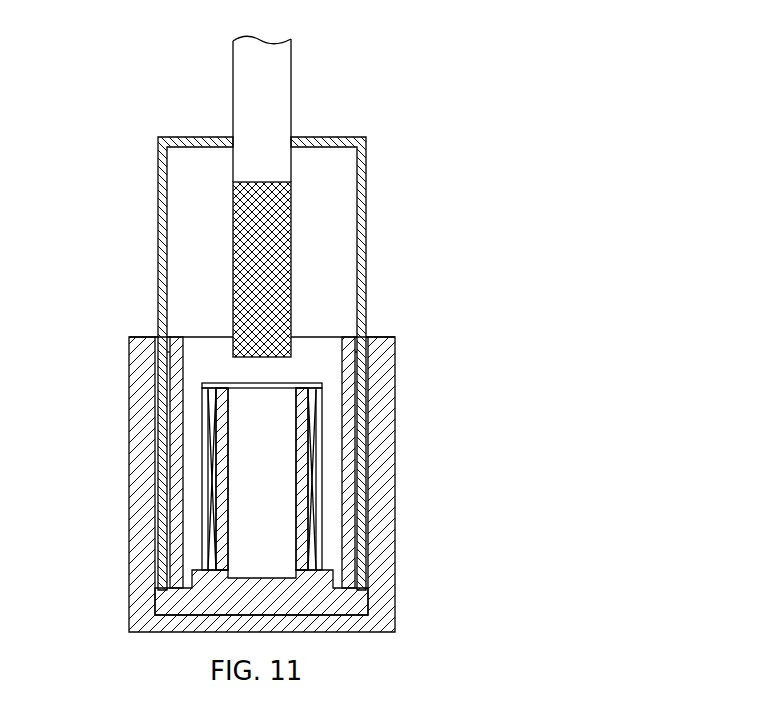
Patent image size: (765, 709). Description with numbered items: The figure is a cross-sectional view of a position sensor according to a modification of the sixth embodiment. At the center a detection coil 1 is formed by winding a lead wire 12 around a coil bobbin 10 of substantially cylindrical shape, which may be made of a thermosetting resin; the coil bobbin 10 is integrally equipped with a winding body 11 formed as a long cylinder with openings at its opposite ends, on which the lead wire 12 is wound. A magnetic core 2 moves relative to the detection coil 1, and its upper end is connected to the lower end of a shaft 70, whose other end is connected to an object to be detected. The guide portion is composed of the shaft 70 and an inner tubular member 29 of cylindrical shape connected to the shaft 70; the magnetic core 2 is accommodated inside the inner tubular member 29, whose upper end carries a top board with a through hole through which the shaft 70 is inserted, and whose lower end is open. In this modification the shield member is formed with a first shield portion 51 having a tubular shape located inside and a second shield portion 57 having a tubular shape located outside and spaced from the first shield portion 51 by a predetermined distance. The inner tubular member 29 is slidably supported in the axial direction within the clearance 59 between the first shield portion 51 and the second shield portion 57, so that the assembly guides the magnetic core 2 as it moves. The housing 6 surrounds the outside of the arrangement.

The detection coil 1 is at (330, 475).
The magnetic core 2 is at (275, 252).
The housing 6 is at (145, 520).
The coil bobbin 10 is at (323, 582).
The winding body 11 is at (303, 512).
The lead wire 12 is at (318, 473).
The inner tubular member 29 is at (160, 230).
The first shield portion 51 is at (175, 463).
The second shield portion 57 is at (155, 412).
The clearance 59 is at (168, 395).
The shaft 70 is at (270, 112).